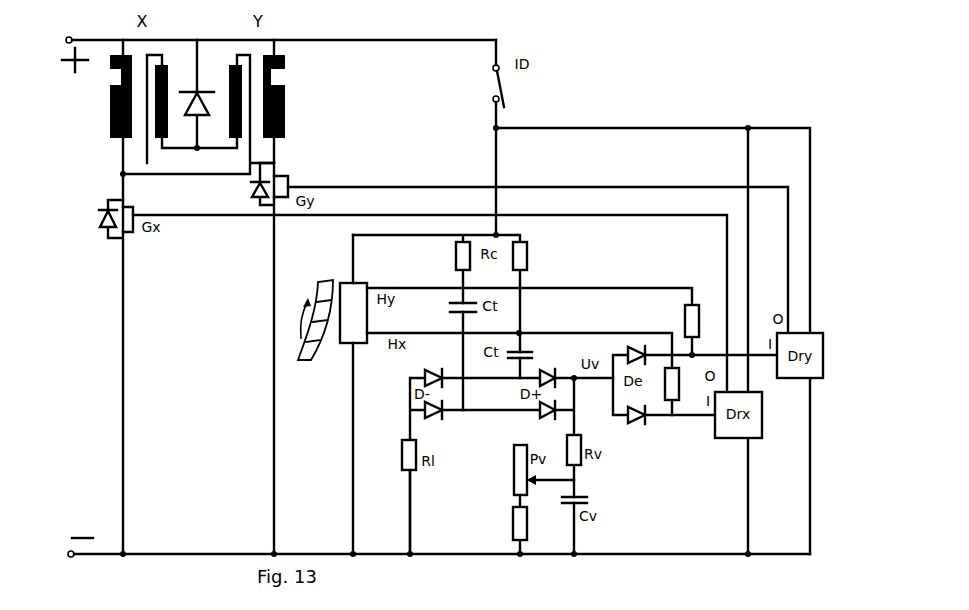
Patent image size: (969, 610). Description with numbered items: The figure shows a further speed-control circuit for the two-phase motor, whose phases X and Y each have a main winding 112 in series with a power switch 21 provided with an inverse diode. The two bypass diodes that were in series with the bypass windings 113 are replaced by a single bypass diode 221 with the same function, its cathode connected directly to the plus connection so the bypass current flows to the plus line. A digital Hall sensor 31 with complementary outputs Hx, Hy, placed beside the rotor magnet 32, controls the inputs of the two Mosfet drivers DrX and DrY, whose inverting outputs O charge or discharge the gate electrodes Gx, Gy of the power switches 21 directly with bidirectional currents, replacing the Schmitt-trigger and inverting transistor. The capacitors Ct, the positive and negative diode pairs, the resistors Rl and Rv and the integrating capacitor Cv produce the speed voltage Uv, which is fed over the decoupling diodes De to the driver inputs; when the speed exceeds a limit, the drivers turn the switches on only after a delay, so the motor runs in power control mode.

The main windings 112 is at (195, 120).
The bypass windings 113 is at (198, 114).
The bypass diode 221 is at (204, 95).
The power switches 21 is at (193, 358).
The Hall sensor 31 is at (353, 394).
The rotor magnet 32 is at (315, 309).